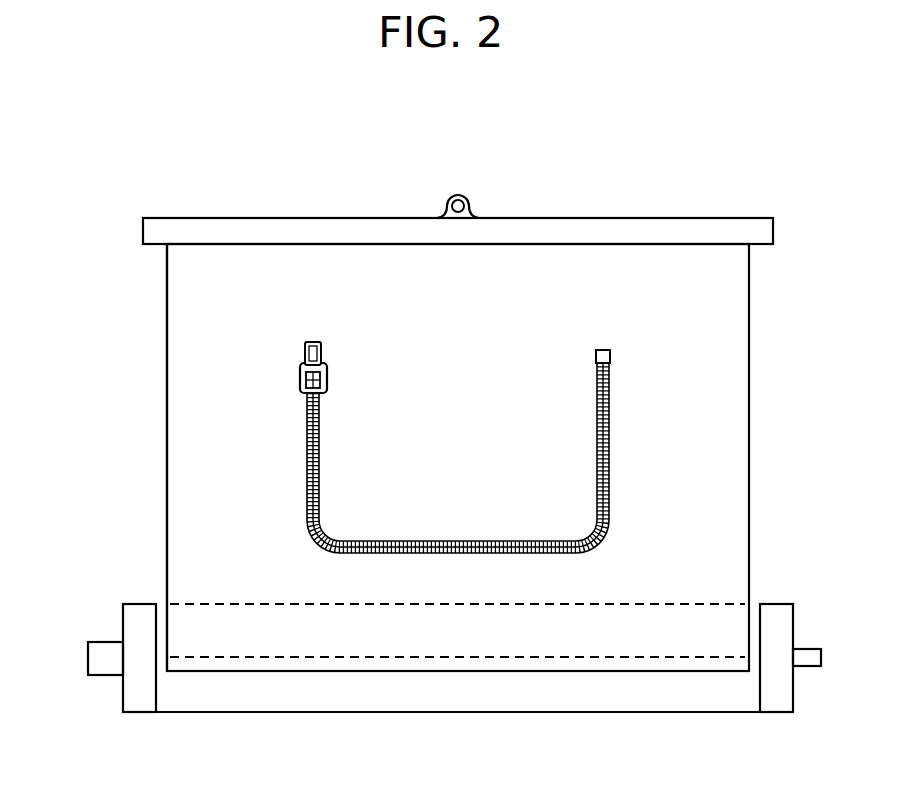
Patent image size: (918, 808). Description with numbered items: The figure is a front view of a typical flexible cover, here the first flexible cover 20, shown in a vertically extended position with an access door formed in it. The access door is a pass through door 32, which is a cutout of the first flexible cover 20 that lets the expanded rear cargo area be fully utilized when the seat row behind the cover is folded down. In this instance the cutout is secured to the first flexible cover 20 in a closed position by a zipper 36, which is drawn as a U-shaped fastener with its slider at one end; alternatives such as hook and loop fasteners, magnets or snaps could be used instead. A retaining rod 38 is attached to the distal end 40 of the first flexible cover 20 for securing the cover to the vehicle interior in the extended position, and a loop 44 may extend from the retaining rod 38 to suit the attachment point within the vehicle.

The first flexible cover 20 is at (167, 418).
The pass through door 32 is at (527, 456).
The zipper 36 is at (308, 486).
The retaining rod 38 is at (226, 223).
The distal end 40 is at (167, 260).
The loop 44 is at (470, 198).